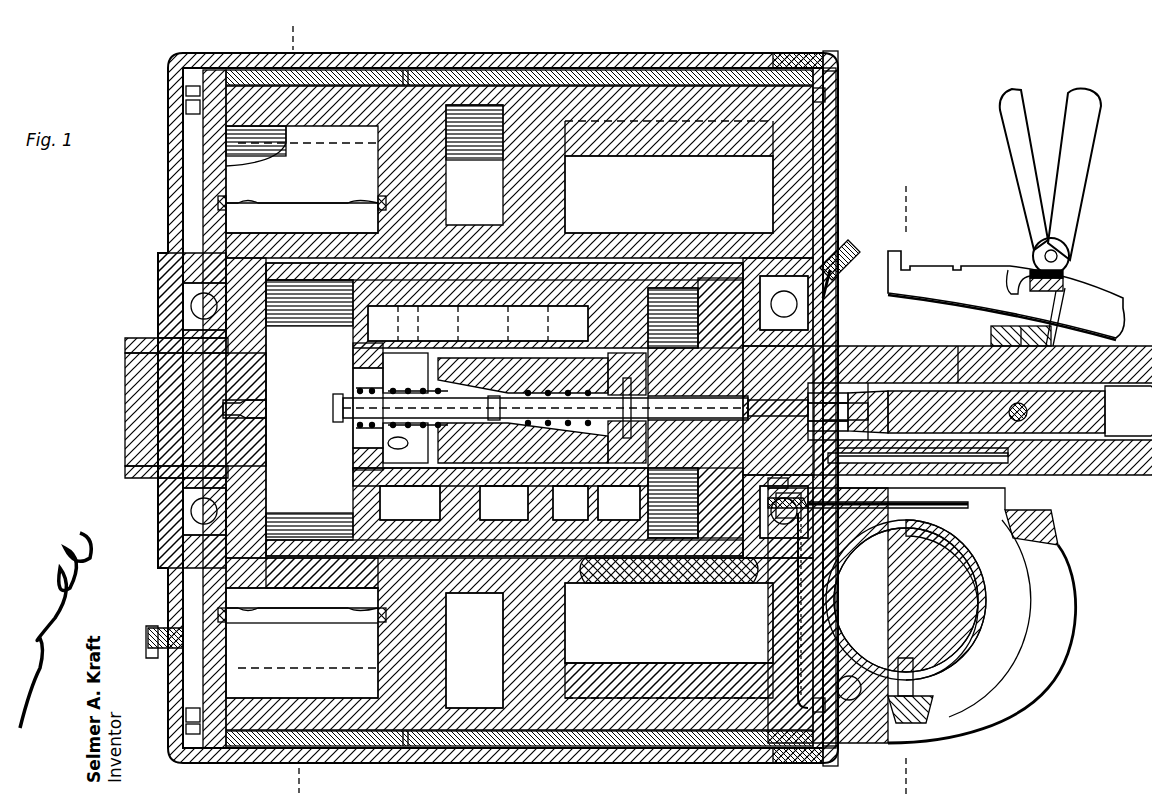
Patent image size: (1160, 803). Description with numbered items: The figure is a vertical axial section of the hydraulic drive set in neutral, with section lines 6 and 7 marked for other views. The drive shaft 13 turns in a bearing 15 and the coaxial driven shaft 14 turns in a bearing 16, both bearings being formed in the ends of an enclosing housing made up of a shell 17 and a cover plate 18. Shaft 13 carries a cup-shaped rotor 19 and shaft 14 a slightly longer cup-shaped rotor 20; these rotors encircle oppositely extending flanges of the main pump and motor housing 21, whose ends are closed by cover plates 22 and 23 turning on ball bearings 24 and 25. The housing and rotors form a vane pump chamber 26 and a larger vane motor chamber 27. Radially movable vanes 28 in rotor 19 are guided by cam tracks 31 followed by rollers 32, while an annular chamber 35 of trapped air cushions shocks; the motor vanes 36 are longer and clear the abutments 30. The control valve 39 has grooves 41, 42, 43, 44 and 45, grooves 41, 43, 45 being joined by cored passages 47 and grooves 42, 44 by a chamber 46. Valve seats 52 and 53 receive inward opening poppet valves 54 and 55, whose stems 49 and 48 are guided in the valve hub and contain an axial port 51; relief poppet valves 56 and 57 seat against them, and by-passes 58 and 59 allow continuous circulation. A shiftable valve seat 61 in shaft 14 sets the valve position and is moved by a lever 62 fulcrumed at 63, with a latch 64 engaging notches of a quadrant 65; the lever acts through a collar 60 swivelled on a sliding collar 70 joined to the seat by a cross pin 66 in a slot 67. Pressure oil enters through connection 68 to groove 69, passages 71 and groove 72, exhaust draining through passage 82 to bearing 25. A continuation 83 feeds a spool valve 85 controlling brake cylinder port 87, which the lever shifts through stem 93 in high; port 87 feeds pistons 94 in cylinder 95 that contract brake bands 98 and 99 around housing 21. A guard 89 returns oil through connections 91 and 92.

The section line 6- 6 is at (285, 21).
The section line 7- 7 is at (898, 188).
The drive shaft 13 is at (125, 375).
The driven shaft 14 is at (1128, 458).
The bearing 15 is at (135, 332).
The bearing 16 is at (865, 338).
The shell 17 is at (160, 179).
The cover plate 18 is at (828, 82).
The cup-shaped rotor 19 is at (292, 572).
The cup-shaped rotor 20 is at (632, 565).
The main pump and motor housing 21 is at (378, 65).
The cover plate 22 is at (198, 136).
The cover plate 23 is at (786, 155).
The ball bearing 24 is at (178, 298).
The ball bearing 25 is at (487, 408).
The vane pump chamber 26 is at (218, 120).
The vane motor chamber 27 is at (620, 52).
The vanes 28 is at (296, 178).
The abutments 30 is at (660, 140).
The cam tracks 31 is at (222, 627).
The rollers 32 is at (222, 200).
The annular chamber 35 is at (474, 406).
The vanes 36 is at (669, 409).
The control valve 39 is at (345, 471).
The groove 41 is at (345, 512).
The groove 42 is at (410, 502).
The groove 43 is at (496, 515).
The groove 44 is at (527, 518).
The groove 45 is at (619, 501).
The chamber 46 is at (523, 410).
The interconnected passages 47 is at (478, 323).
The stem 48 is at (676, 408).
The stem 49 is at (325, 400).
The axial port 51 is at (472, 398).
The valve seat 52 is at (345, 341).
The valve seat 53 is at (640, 346).
The poppet valve 54 is at (405, 408).
The poppet valve 55 is at (598, 362).
The relief poppet valve 56 is at (355, 416).
The relief poppet valve 57 is at (638, 432).
The by-pass 58 is at (358, 373).
The by-pass 59 is at (598, 370).
The collar 60 is at (986, 325).
The shiftable valve seat 61 is at (880, 378).
The lever 62 is at (1053, 603).
The fulcrum 63 is at (928, 705).
The latch 64 is at (1002, 262).
The quadrant 65 is at (926, 265).
The cross pin 66 is at (1030, 405).
The slot 67 is at (950, 340).
The connection 68 is at (808, 268).
The groove 69 is at (853, 279).
The collar 70 is at (1009, 323).
The passages 71 is at (812, 350).
The groove 72 is at (774, 380).
The passage 82 is at (920, 452).
The continuation of passage 71 83 is at (870, 455).
The hollow spool-shaped valve 85 is at (850, 548).
The brake cylinder port 87 is at (858, 530).
The guard 89 is at (796, 600).
The connection 91 is at (838, 672).
The connection 92 is at (146, 628).
The stem 93 is at (882, 503).
The pistons 94 is at (948, 558).
The open ended cylinder 95 is at (978, 618).
The brake band 98 is at (222, 62).
The brake band 99 is at (505, 65).